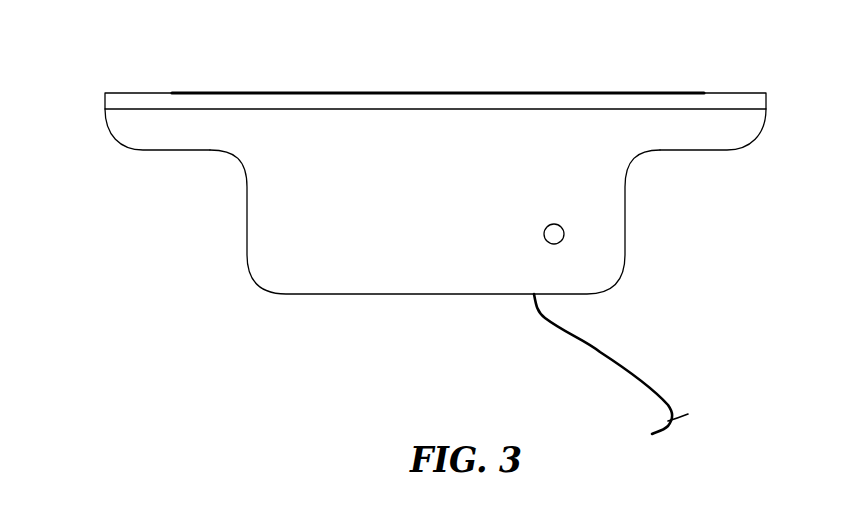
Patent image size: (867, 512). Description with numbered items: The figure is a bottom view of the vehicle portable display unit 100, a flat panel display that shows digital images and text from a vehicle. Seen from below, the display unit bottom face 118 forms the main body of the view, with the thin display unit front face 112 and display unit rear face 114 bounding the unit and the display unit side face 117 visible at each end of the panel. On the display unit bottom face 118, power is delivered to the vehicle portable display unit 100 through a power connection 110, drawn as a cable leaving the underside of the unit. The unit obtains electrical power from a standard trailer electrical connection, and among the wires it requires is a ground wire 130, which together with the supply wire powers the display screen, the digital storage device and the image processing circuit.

The vehicle portable display unit 100 is at (437, 224).
The power connection 110 is at (620, 358).
The display unit front face 112 is at (438, 92).
The display unit rear face 114 is at (450, 294).
The display unit side face 117 is at (104, 101).
The display unit bottom face 118 is at (330, 228).
The ground wire 130 is at (564, 234).